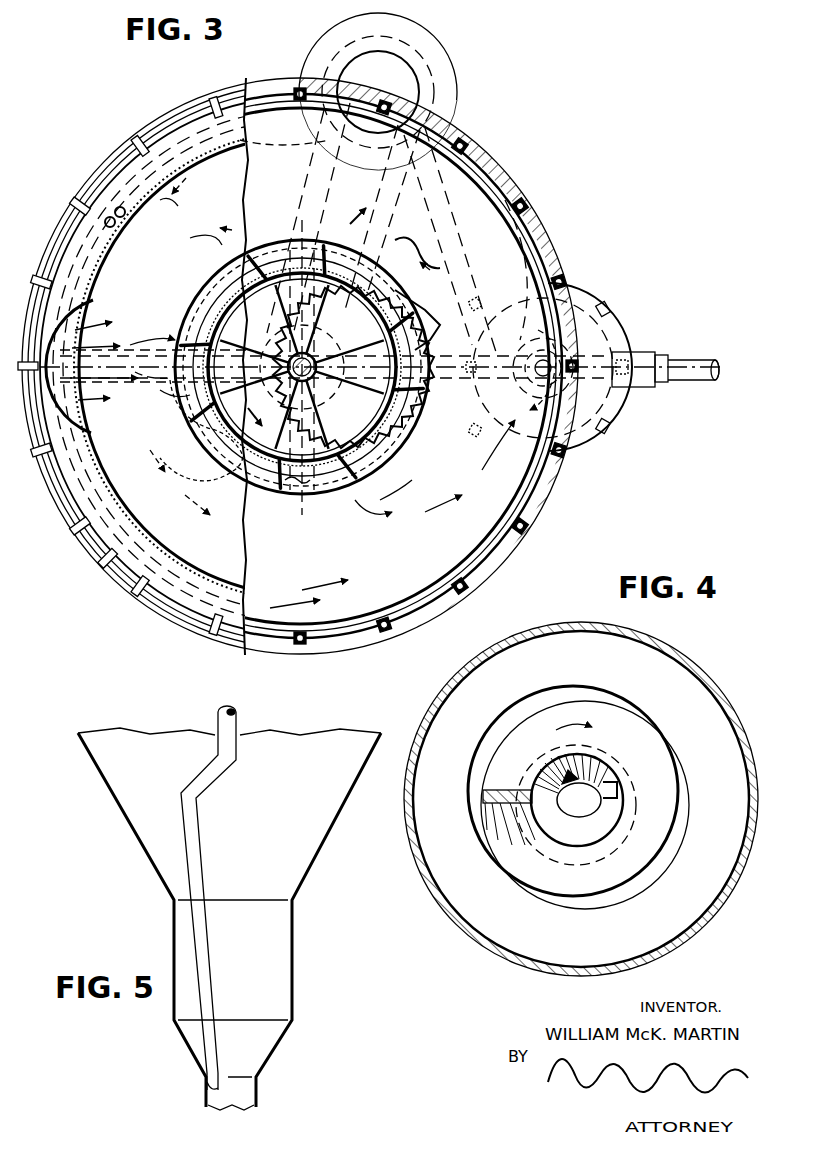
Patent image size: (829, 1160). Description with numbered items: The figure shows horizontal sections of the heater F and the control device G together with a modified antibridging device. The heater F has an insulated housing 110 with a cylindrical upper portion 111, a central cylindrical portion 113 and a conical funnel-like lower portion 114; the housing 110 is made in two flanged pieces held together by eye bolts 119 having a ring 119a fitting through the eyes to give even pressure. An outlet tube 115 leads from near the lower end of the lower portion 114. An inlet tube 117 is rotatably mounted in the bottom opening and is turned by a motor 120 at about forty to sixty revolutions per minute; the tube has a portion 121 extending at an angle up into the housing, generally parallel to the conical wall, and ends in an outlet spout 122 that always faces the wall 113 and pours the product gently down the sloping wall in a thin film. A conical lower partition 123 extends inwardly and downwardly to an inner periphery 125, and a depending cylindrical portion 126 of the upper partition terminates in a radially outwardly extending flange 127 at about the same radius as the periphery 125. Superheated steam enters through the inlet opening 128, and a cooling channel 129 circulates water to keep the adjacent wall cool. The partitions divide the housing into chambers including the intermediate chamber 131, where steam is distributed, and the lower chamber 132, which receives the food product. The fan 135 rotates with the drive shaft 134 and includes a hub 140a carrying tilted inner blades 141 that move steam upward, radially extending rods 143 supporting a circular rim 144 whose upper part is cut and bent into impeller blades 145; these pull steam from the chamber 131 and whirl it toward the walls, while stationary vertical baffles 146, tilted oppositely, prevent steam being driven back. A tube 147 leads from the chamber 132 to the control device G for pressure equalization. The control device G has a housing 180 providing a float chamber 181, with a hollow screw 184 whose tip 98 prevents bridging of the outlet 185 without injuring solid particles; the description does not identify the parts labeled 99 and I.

In FIG. 3, the insulated housing 110 is at (112, 148).
In FIG. 3, the cylindrical upper portion 111 is at (165, 205).
In FIG. 3, the central cylindrical portion 113 is at (468, 560).
In FIG. 3, the conical funnel-like lower portion 114 is at (496, 471).
In FIG. 3, the outlet tube 115 is at (312, 356).
In FIG. 3, the inlet tube 117 is at (145, 345).
In FIG. 3, the eye bolts 119 is at (78, 200).
In FIG. 3, the ring 119a is at (62, 222).
In FIG. 3, the motor 120 is at (448, 52).
In FIG. 3, the angled portion of inlet tube 121 is at (168, 392).
In FIG. 3, the outlet spout 122 is at (130, 384).
In FIG. 3, the lower partition 123 is at (246, 577).
In FIG. 3, the inner periphery of lower partition 125 is at (214, 240).
In FIG. 3, the depending cylindrical portion 126 is at (228, 312).
In FIG. 3, the radially outwardly extending flange 127 is at (344, 330).
In FIG. 3, the inlet opening 128 is at (105, 318).
In FIG. 3, the cooling channel 129 is at (118, 230).
In FIG. 3, the intermediate chamber 131 is at (152, 458).
In FIG. 3, the lower chamber 132 is at (418, 513).
In FIG. 3, the drive shaft 134 is at (306, 378).
In FIG. 3, the fan 135 is at (400, 468).
In FIG. 3, the hub 140a is at (300, 360).
In FIG. 3, the inner blades 141 is at (330, 398).
In FIG. 3, the radially outwardly extending rods 143 is at (292, 232).
In FIG. 3, the circular rim 144 is at (384, 408).
In FIG. 3, the impeller blades 145 is at (400, 250).
In FIG. 3, the stationary vertical baffles 146 is at (265, 478).
In FIG. 3, the tube 147 is at (672, 355).
In FIG. 4, the housing 180 is at (474, 946).
In FIG. 5, the housing 180 is at (125, 822).
In FIG. 3, the float chamber 181 is at (585, 310).
In FIG. 4, the float chamber 181 is at (566, 947).
In FIG. 5, the float chamber 181 is at (272, 825).
In FIG. 4, the hollow screw 184 is at (654, 744).
In FIG. 4, the outlet 185 is at (606, 806).
In FIG. 4, the tip 98 is at (618, 782).
In FIG. 5, the tip 98 is at (218, 1090).
In FIG. 5, the feed tube 99 is at (190, 872).
In FIG. 3, the heater F is at (498, 152).
In FIG. 3, the control device G is at (622, 318).
In FIG. 3, the input I is at (690, 385).